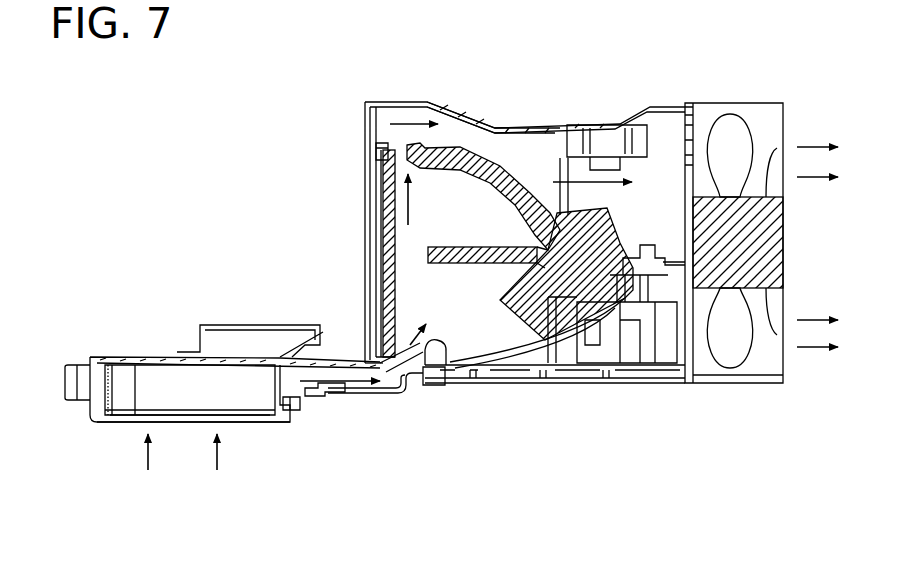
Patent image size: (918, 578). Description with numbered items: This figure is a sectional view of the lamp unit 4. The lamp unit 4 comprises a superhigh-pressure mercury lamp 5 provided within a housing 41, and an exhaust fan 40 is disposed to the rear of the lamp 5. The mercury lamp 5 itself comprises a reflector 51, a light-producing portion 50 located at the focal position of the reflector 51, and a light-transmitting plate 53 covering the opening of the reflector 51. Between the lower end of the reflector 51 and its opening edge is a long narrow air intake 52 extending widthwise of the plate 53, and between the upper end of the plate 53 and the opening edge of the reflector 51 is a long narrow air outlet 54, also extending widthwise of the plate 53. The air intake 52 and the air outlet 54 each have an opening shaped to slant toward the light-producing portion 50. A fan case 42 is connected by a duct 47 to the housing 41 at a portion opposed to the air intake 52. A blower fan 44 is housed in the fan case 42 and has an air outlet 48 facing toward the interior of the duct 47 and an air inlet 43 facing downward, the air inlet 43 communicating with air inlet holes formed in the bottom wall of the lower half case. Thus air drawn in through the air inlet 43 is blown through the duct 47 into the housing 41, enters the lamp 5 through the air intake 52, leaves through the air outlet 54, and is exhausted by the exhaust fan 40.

The lamp unit 4 is at (693, 103).
The superhigh-pressure mercury lamp 5 is at (505, 155).
The exhaust fan 40 is at (745, 140).
The housing 41 is at (470, 112).
The fan case 42 is at (132, 360).
The air inlet 43 is at (173, 420).
The blower fan 44 is at (223, 386).
The duct 47 is at (360, 397).
The air outlet 48 is at (293, 407).
The light-producing portion 50 is at (527, 242).
The reflector 51 is at (515, 335).
The air intake 52 is at (443, 367).
The light-transmitting plate 53 is at (368, 243).
The air outlet 54 is at (382, 162).